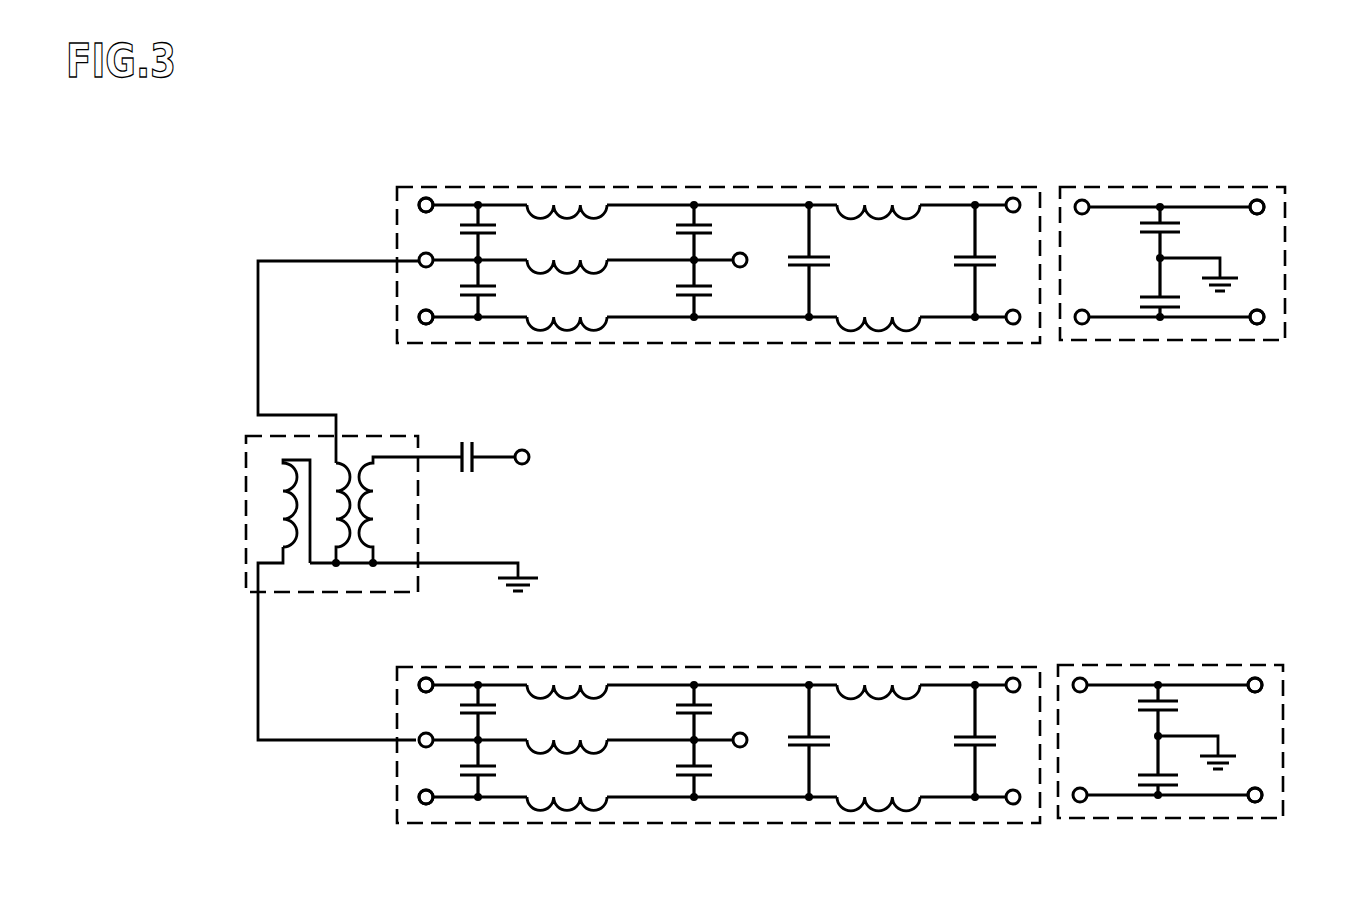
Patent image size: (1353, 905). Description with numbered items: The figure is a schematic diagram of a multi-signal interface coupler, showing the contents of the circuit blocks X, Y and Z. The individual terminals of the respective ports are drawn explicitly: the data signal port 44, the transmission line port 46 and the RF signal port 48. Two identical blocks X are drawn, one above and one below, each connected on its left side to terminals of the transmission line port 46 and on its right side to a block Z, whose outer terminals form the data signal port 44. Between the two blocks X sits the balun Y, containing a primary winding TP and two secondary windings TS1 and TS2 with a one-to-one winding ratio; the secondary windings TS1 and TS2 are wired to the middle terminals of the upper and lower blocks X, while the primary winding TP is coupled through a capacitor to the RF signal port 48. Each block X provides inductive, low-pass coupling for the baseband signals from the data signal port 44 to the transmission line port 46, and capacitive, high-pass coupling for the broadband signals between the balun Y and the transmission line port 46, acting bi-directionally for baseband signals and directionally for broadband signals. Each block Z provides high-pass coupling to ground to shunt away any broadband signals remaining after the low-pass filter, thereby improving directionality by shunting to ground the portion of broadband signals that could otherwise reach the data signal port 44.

The data signal port 44 is at (1264, 207).
The transmission line port 46 is at (410, 206).
The RF signal port 48 is at (529, 457).
The secondary winding TS1 is at (339, 466).
The secondary winding TS2 is at (284, 492).
The primary winding TP is at (371, 521).
The block X is at (718, 481).
The balun Y is at (310, 514).
The block Z is at (1171, 478).